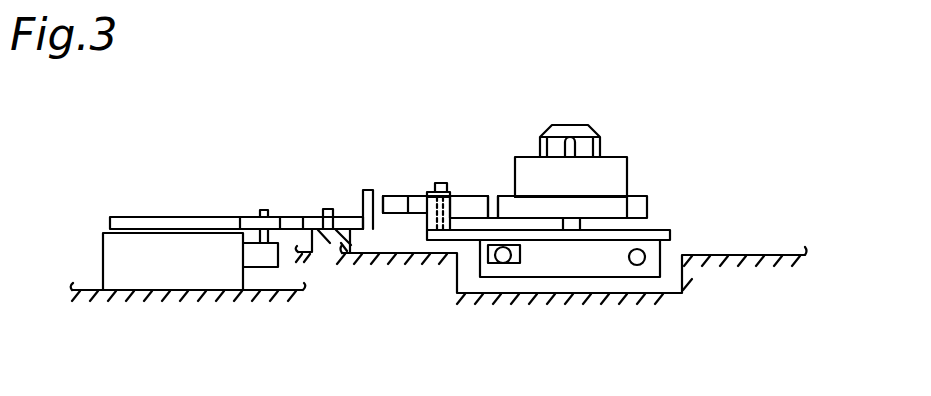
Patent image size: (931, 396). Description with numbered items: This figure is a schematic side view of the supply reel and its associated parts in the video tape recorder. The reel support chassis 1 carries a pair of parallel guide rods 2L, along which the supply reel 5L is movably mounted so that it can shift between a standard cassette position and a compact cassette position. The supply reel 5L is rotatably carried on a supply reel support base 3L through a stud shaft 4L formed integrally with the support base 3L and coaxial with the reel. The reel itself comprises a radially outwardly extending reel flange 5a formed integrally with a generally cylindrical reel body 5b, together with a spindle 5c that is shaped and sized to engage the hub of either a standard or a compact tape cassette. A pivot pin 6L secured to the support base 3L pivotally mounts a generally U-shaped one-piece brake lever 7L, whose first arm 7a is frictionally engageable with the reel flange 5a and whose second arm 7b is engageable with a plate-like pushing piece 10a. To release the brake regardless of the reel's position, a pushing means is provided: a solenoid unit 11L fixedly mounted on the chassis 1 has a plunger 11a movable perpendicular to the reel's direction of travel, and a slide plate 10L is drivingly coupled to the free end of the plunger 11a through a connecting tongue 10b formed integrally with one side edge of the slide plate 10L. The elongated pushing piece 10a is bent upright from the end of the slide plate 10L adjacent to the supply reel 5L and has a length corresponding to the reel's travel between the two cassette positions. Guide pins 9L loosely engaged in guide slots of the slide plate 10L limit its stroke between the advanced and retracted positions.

The reel support chassis 1 is at (762, 255).
The parallel guide rods 2L is at (503, 263).
The supply reel support base 3L is at (667, 234).
The stud shaft 4L is at (575, 227).
The supply reel 5L is at (617, 160).
The reel flange 5a is at (580, 207).
The reel body 5b is at (528, 162).
The spindle 5c is at (575, 125).
The pivot pin 6L is at (440, 183).
The brake lever 7L is at (416, 208).
The first arm 7a is at (472, 208).
The second arm 7b is at (395, 207).
The guide pins 9L is at (327, 210).
The slide plate 10L is at (203, 216).
The pushing piece 10a is at (364, 190).
The connecting tongue 10b is at (252, 216).
The solenoid unit 11L is at (188, 268).
The plunger 11a is at (263, 258).